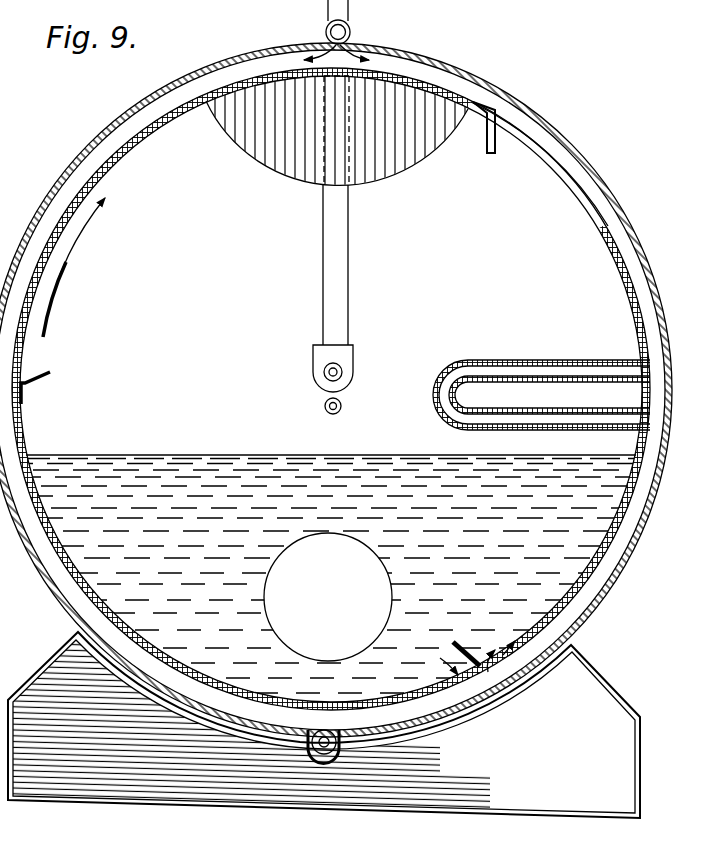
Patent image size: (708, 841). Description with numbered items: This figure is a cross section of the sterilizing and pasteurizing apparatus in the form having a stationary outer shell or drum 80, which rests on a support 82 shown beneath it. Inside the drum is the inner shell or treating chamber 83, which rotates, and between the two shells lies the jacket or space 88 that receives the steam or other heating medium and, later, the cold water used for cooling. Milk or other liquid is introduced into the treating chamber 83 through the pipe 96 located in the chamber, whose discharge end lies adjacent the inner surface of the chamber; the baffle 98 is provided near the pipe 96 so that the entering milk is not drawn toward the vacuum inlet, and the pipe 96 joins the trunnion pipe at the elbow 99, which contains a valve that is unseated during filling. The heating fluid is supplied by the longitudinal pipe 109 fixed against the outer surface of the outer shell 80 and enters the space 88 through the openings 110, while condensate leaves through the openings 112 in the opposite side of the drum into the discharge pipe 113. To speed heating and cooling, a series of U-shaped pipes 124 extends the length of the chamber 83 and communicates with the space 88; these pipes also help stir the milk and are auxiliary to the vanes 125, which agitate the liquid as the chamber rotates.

The outer shell or drum 80 is at (627, 213).
The support 82 is at (605, 710).
The inner shell or treating chamber 83 is at (614, 240).
The jacket or space 88 is at (594, 190).
The pipe 96 is at (340, 269).
The baffle 98 is at (379, 172).
The elbow 99 is at (345, 353).
The longitudinal pipe 109 is at (350, 32).
The openings 110 is at (374, 50).
The openings 112 is at (327, 730).
The discharge pipe 113 is at (345, 750).
The U-shaped pipes 124 is at (483, 360).
The vanes 125 is at (488, 150).